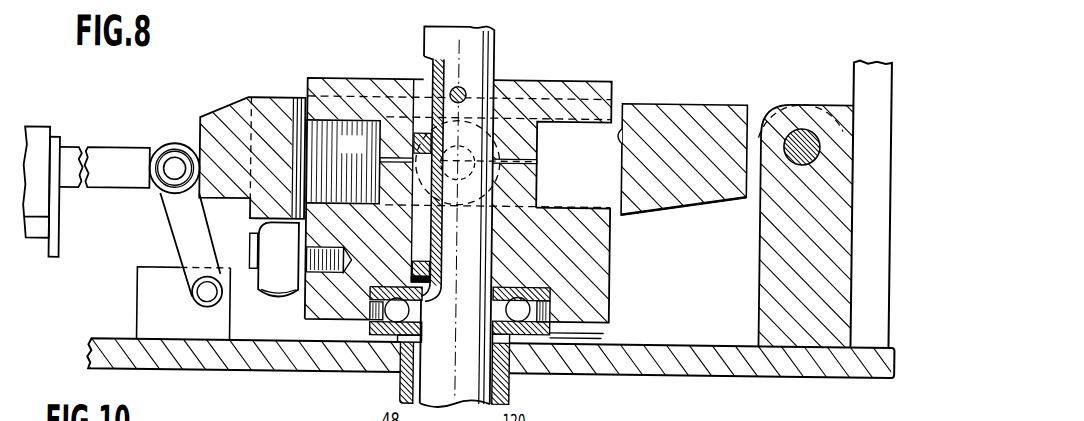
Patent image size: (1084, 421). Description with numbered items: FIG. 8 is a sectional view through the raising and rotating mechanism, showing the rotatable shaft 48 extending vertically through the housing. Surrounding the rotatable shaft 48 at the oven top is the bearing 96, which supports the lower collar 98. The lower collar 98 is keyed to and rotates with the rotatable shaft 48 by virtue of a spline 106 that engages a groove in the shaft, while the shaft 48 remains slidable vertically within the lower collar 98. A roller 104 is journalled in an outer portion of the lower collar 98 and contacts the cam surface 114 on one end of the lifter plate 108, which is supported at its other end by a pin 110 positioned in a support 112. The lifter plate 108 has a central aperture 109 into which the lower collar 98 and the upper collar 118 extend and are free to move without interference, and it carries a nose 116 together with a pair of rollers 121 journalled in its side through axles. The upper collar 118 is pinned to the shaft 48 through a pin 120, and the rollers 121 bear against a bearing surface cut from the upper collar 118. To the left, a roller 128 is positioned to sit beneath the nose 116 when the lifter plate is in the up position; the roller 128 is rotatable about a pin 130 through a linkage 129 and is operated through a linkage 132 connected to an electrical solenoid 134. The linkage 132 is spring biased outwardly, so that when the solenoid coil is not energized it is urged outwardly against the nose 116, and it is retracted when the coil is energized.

The rotatable shaft 48 is at (492, 61).
The bearing 96 is at (560, 334).
The lower collar 98 is at (597, 266).
The roller 104 is at (269, 286).
The spline 106 is at (420, 246).
The lifter plate 108 is at (696, 102).
The central aperture 109 is at (617, 135).
The pin 110 is at (799, 127).
The support 112 is at (782, 275).
The cam surface 114 is at (253, 256).
The nose 116 is at (217, 120).
The upper collar 118 is at (566, 91).
The pin 120 is at (449, 92).
The rollers 121 is at (390, 148).
The roller 128 is at (162, 151).
The linkage 129 is at (185, 247).
The pin 130 is at (205, 301).
The linkage 132 is at (99, 161).
The electrical solenoid 134 is at (42, 144).